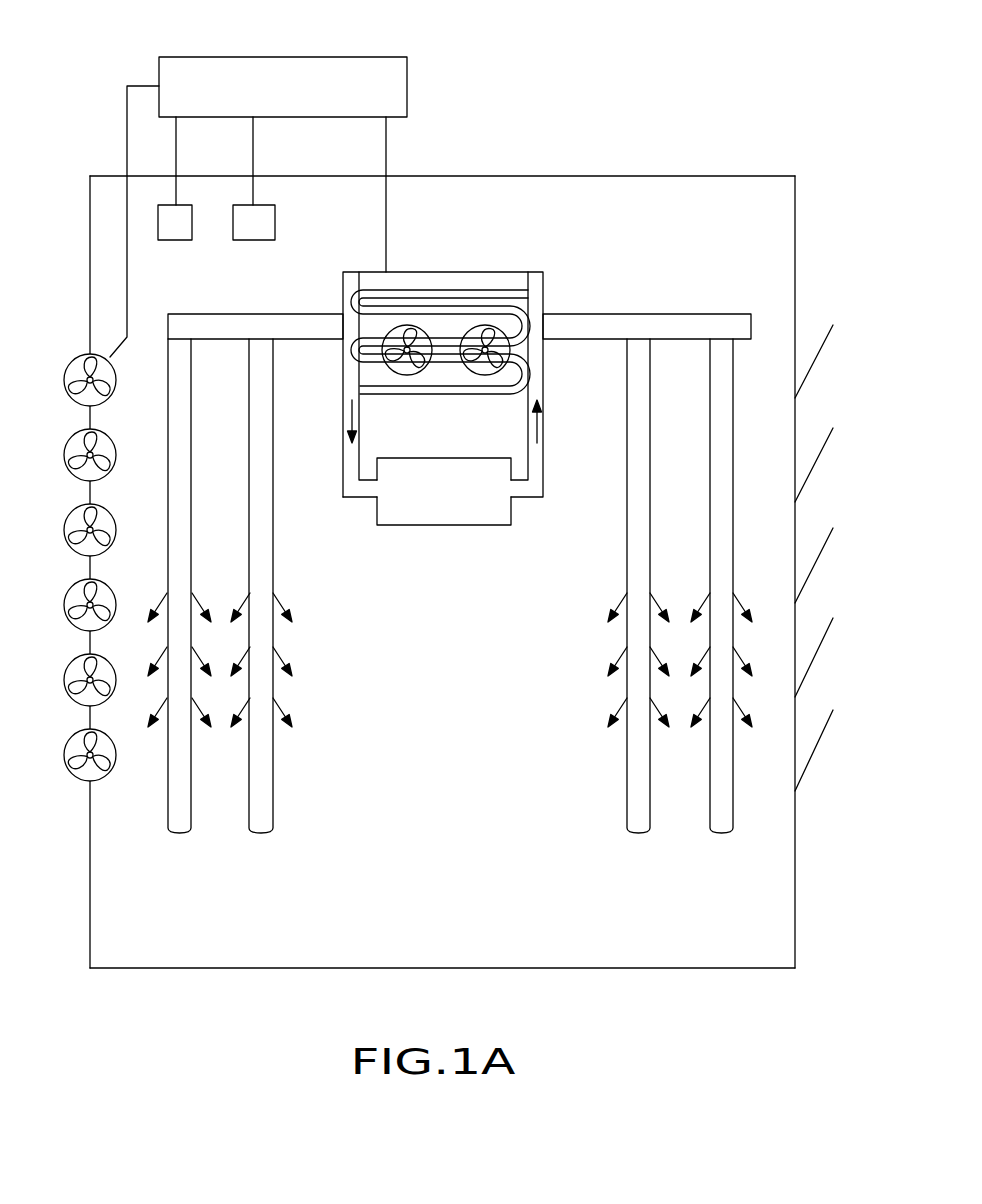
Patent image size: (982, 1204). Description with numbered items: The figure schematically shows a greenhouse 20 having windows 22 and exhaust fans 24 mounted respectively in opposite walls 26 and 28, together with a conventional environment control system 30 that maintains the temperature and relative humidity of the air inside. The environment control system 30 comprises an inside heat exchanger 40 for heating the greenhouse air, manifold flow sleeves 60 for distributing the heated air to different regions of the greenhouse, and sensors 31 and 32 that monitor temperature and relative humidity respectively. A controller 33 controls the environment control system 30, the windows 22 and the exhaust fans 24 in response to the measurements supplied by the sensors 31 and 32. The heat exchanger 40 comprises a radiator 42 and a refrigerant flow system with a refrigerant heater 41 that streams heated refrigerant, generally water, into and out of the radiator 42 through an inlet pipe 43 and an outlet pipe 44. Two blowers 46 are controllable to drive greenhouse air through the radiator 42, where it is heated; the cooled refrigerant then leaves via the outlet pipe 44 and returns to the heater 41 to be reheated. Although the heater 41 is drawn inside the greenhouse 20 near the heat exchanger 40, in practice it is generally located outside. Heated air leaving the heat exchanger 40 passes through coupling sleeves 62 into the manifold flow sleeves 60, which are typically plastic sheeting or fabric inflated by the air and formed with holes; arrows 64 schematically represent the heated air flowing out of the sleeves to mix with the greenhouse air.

The greenhouse 20 is at (457, 727).
The windows 22 is at (817, 356).
The exhaust fans 24 is at (72, 737).
The wall 26 is at (795, 899).
The wall 28 is at (90, 900).
The environment control system 30 is at (441, 45).
The temperature sensor 31 is at (173, 242).
The RH sensor 32 is at (255, 242).
The controller 33 is at (407, 82).
The inside heat exchanger 40 is at (565, 289).
The refrigerant heater 41 is at (457, 502).
The radiator 42 is at (438, 288).
The inlet pipe 43 is at (543, 430).
The outlet pipe 44 is at (343, 416).
The blowers 46 is at (485, 375).
The manifold flow sleeves 60 is at (249, 467).
The coupling sleeves 62 is at (305, 313).
The arrows 64 is at (250, 593).